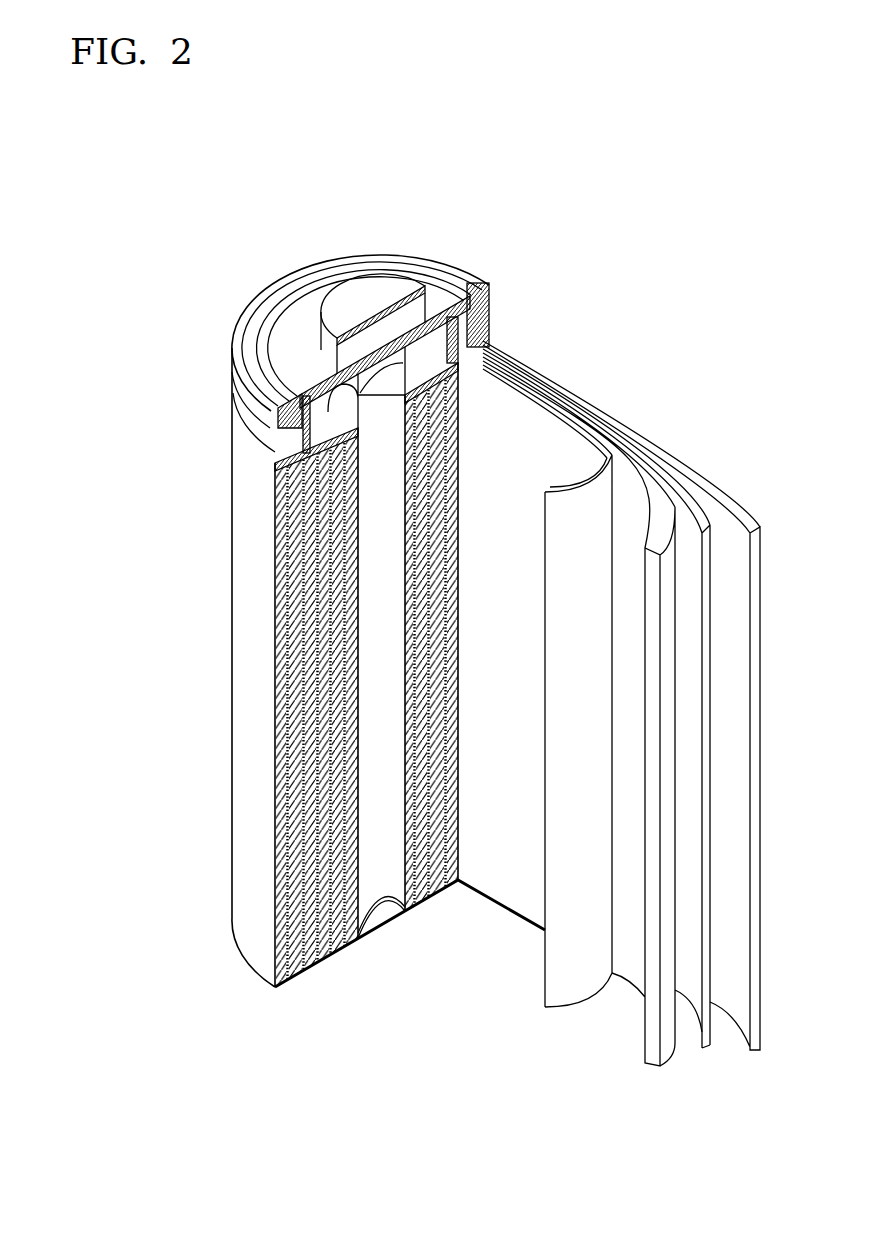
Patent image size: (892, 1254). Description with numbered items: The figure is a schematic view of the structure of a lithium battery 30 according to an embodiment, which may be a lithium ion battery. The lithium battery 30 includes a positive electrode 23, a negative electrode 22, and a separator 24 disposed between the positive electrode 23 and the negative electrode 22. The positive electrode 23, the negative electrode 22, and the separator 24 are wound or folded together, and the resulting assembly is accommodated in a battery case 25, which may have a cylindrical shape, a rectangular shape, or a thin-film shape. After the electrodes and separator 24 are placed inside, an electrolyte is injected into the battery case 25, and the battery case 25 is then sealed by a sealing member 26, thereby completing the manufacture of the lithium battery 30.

The lithium battery 30 is at (427, 198).
The battery case 25 is at (238, 664).
The sealing member 26 is at (352, 300).
The separator 24 is at (591, 445).
The positive electrode 23 is at (663, 500).
The negative electrode 22 is at (747, 520).